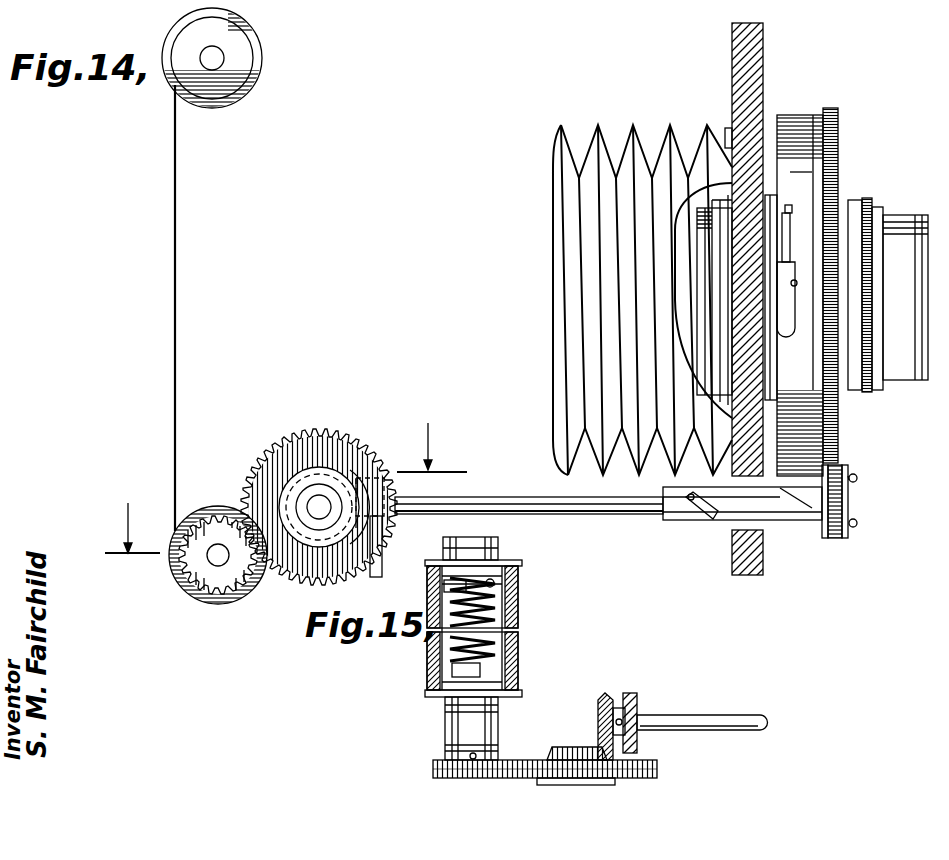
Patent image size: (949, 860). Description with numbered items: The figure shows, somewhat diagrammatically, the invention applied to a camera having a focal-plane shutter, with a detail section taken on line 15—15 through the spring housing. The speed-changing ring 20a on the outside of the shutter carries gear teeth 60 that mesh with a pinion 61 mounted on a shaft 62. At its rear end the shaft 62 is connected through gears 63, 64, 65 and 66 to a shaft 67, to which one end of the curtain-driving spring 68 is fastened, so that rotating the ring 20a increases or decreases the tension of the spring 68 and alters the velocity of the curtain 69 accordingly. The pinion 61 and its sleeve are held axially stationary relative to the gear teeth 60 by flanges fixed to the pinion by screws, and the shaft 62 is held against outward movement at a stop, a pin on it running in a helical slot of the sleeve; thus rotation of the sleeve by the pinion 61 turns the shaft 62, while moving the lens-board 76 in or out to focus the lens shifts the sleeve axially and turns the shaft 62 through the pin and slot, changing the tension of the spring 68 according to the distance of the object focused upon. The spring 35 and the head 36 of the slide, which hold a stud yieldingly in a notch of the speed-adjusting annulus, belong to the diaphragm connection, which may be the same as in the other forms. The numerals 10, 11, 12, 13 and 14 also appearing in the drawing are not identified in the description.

In FIG. 14, the rack bar 10 is at (802, 521).
In FIG. 14, the gear flanges 11 is at (825, 539).
In FIG. 14, the bolts 12 is at (857, 476).
In FIG. 14, the pawl bar / disc 13 is at (383, 560).
In FIG. 15, the pawl bar / disc 13 is at (636, 694).
In FIG. 14, the clip 14 is at (702, 516).
In FIG. 14, the section line 15 is at (688, 504).
In FIG. 14, the speed-changing ring 20a is at (820, 116).
In FIG. 14, the spring 35 is at (847, 401).
In FIG. 14, the head 36 is at (802, 272).
In FIG. 14, the gear teeth 60 is at (838, 125).
In FIG. 14, the pinion 61 is at (848, 497).
In FIG. 14, the shaft 62 is at (549, 501).
In FIG. 14, the gear 63 is at (368, 470).
In FIG. 15, the gear 63 is at (606, 694).
In FIG. 14, the gear 64 is at (334, 481).
In FIG. 15, the gear 64 is at (578, 733).
In FIG. 14, the gear 65 is at (335, 431).
In FIG. 15, the gear 65 is at (657, 767).
In FIG. 14, the gear 66 is at (183, 592).
In FIG. 15, the gear 66 is at (433, 770).
In FIG. 14, the shaft 67 is at (222, 567).
In FIG. 15, the shaft 67 is at (462, 584).
In FIG. 15, the driving spring 68 is at (493, 609).
In FIG. 14, the curtain 69 is at (177, 386).
In FIG. 15, the curtain 69 is at (513, 648).
In FIG. 14, the lens-board 76 is at (760, 577).